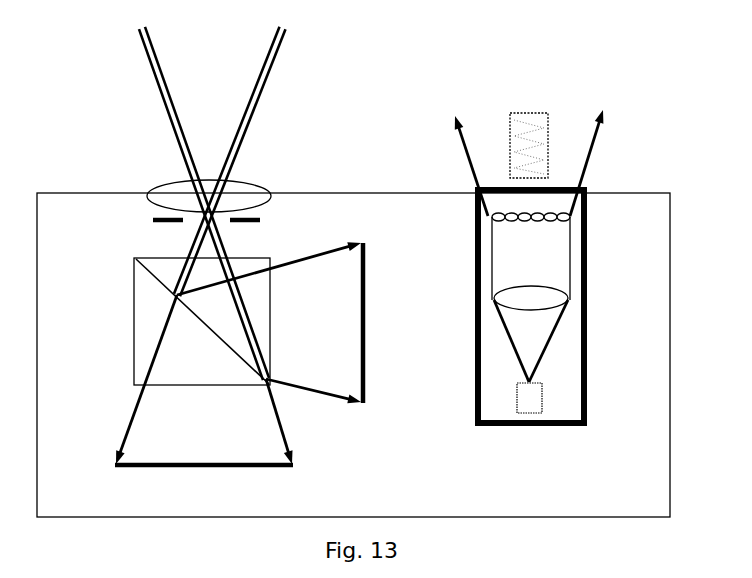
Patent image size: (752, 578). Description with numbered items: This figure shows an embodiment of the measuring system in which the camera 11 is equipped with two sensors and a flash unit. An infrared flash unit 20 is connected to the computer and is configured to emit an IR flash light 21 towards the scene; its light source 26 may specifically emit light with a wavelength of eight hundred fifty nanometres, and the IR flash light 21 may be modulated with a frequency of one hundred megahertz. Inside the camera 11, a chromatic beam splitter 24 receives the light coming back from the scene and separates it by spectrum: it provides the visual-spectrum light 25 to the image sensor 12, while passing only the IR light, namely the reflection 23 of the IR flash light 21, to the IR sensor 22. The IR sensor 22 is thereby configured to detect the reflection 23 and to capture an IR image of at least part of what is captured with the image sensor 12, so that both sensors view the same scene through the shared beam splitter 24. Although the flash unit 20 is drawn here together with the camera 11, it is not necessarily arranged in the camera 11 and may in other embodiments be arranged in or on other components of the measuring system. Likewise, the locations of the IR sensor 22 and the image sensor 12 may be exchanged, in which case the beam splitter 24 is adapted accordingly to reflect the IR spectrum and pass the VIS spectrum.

The camera 11 is at (74, 232).
The image sensor 12 is at (366, 292).
The infrared flash unit 20 is at (572, 372).
The IR flash light 21 is at (540, 112).
The IR sensor 22 is at (267, 472).
The reflection of the IR flash light 23 is at (148, 66).
The chromatic beam splitter 24 is at (143, 270).
The visual-spectrum light 25 is at (277, 67).
The light source 26 is at (537, 403).